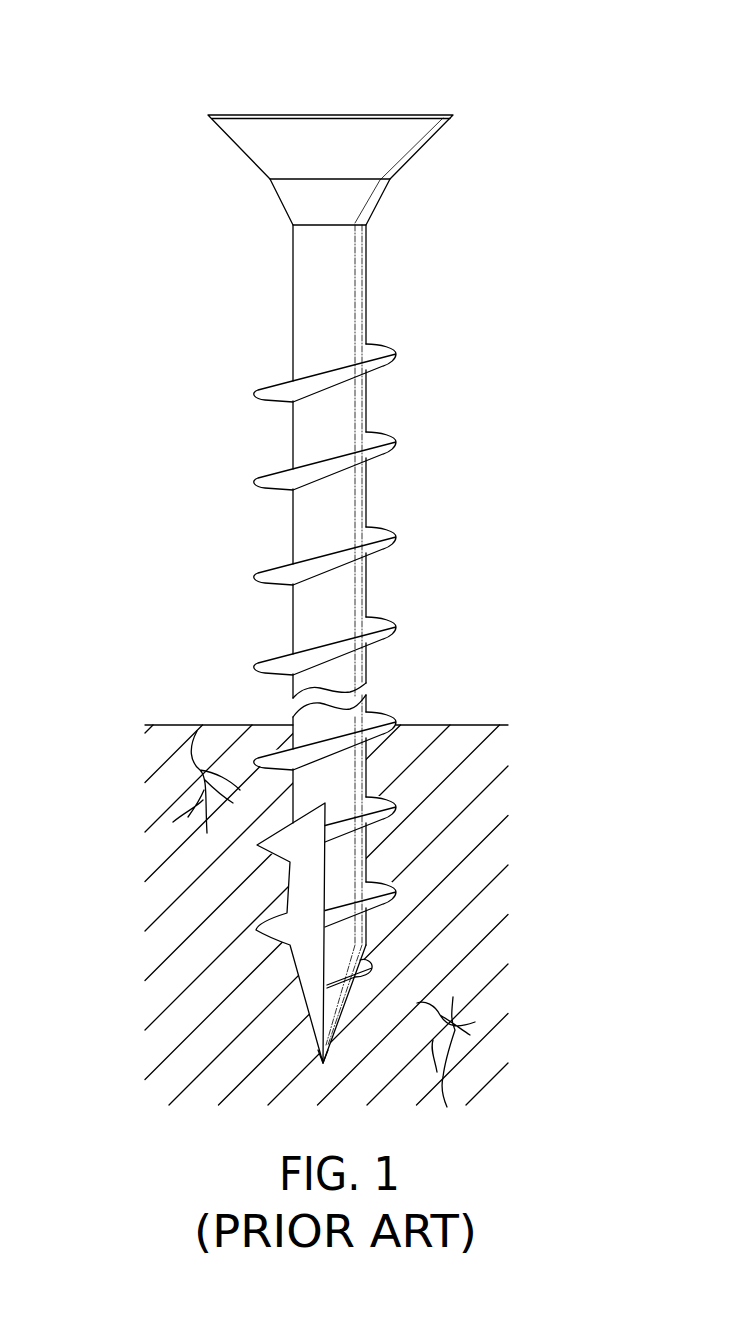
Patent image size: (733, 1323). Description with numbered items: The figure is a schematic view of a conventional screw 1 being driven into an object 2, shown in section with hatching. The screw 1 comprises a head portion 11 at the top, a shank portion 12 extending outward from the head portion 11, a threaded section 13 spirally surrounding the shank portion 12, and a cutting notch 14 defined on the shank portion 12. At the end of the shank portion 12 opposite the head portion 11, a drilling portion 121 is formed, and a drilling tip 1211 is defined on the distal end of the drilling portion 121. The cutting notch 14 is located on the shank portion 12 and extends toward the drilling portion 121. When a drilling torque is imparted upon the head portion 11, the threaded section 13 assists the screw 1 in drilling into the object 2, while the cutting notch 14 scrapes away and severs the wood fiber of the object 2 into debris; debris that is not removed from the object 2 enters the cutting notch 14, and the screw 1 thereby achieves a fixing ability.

The screw 1 is at (305, 589).
The head portion 11 is at (395, 142).
The shank portion 12 is at (313, 275).
The threaded section 13 is at (377, 442).
The cutting notch 14 is at (300, 890).
The drilling portion 121 is at (304, 997).
The drilling tip 1211 is at (323, 1065).
The object 2 is at (428, 763).